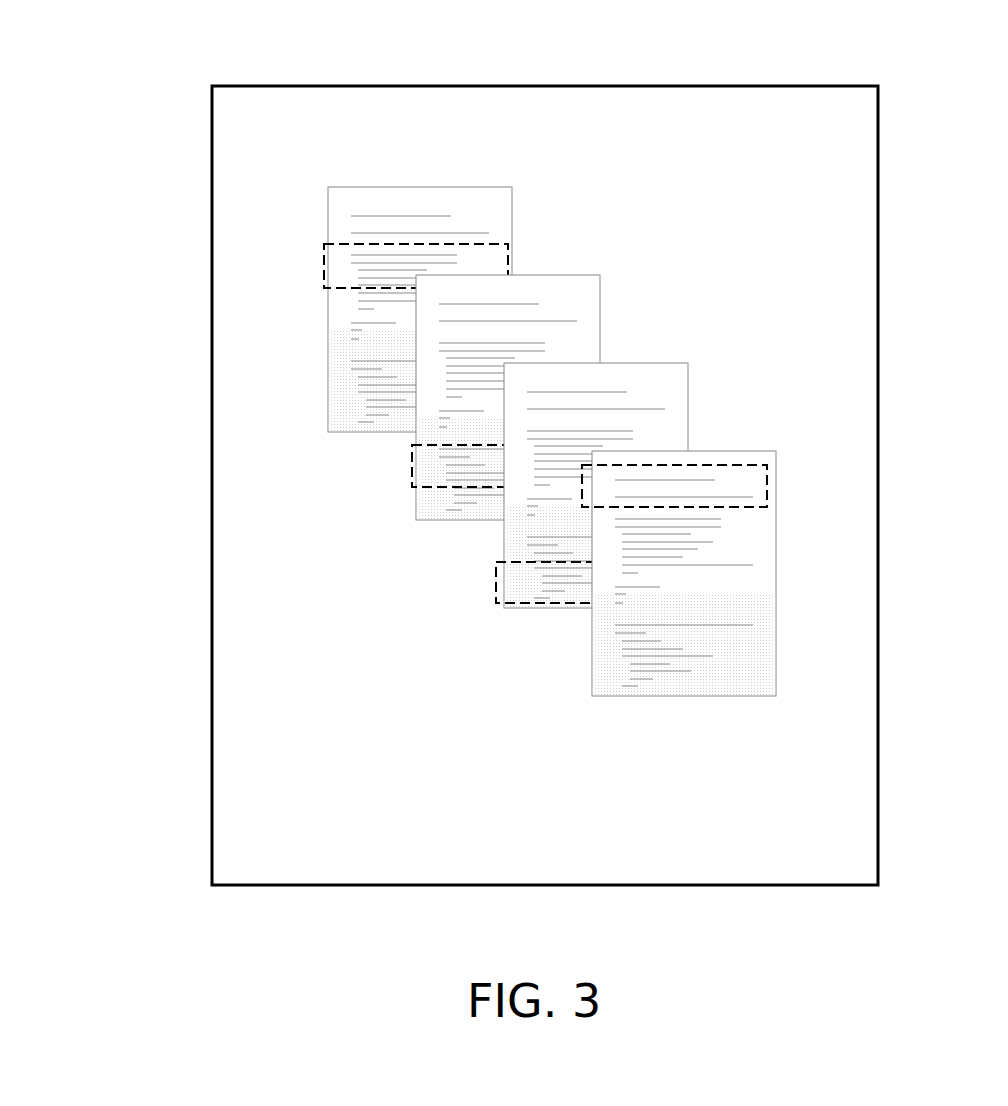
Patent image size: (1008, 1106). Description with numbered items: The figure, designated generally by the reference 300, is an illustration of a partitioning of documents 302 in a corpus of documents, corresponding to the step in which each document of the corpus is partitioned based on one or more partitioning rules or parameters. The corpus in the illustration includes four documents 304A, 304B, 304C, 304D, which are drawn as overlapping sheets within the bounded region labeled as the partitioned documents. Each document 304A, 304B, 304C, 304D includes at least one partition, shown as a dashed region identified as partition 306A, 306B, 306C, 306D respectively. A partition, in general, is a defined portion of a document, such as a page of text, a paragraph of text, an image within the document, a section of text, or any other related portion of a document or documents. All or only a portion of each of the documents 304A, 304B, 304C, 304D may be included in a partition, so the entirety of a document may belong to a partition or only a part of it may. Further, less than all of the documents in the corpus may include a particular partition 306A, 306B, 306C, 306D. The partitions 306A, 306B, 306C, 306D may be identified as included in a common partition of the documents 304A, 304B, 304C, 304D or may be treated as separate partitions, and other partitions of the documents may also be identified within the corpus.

The partitioned documents environment 300 is at (95, 94).
The partitioning of documents 302 is at (212, 557).
The document 304A is at (513, 220).
The document 304B is at (600, 298).
The document 304C is at (687, 395).
The document 304D is at (773, 658).
The partition 306A is at (327, 287).
The partition 306B is at (412, 488).
The partition 306C is at (496, 605).
The partition 306D is at (768, 510).